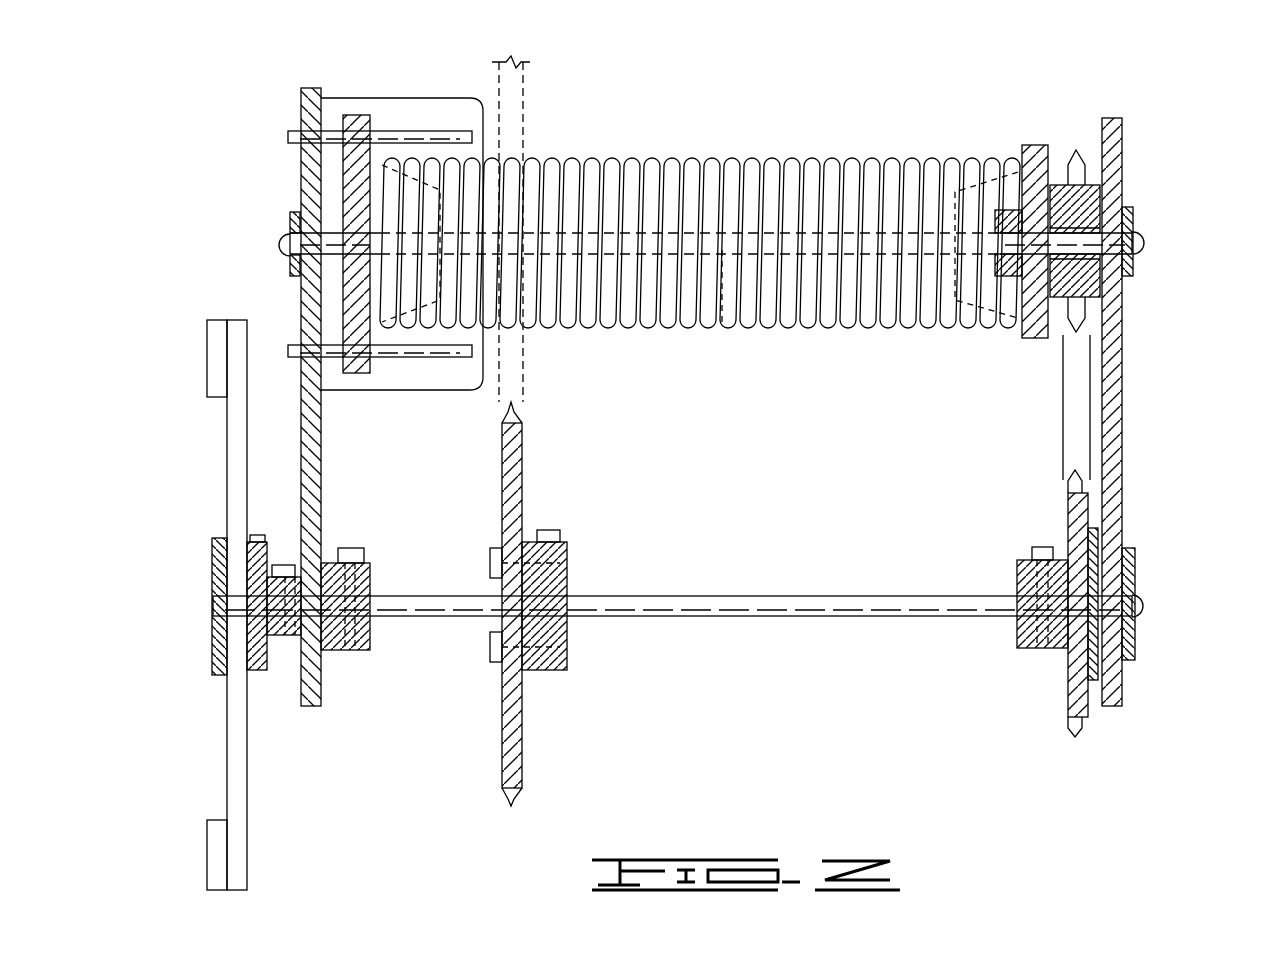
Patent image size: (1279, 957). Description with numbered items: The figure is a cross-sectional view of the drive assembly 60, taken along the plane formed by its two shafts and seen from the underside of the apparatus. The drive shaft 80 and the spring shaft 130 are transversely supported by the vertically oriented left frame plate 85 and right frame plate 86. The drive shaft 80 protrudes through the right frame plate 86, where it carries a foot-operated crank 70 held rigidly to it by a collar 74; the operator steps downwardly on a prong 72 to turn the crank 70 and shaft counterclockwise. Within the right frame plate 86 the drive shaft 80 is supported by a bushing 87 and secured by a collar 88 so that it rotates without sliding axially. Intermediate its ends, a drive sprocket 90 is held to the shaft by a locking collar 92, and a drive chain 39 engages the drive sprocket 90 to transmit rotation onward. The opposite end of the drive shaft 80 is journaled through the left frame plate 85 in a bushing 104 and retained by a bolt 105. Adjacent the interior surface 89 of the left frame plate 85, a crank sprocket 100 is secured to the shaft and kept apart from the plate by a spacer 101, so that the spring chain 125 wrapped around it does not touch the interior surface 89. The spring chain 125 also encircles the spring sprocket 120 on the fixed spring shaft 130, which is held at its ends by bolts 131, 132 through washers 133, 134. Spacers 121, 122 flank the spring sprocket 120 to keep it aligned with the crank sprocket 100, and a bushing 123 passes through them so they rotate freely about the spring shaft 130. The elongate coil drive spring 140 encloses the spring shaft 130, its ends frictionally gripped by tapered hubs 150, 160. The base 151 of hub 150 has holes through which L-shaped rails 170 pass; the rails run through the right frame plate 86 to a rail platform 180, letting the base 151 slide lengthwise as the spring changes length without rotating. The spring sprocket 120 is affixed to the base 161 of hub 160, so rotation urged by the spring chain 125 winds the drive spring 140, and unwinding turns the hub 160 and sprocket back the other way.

The drive assembly 60 is at (845, 98).
The crank 70 is at (175, 535).
The prong 72 is at (210, 835).
The collar 74 is at (212, 640).
The drive shaft 80 is at (785, 595).
The left frame plate 85 is at (1124, 458).
The right frame plate 86 is at (300, 448).
The bushing 87 is at (330, 562).
The collar 88 is at (366, 655).
The interior surface 89 is at (1098, 364).
The drive sprocket 90 is at (522, 490).
The locking collar 92 is at (570, 560).
The crank sprocket 100 is at (1068, 700).
The spacer 101 is at (1100, 545).
The bushing 104 is at (1137, 580).
The bolt 105 is at (1150, 606).
The spring sprocket 120 is at (1093, 160).
The spacer 121 is at (1062, 320).
The spacer 122 is at (1095, 272).
The bushing 123 is at (1120, 192).
The spring chain 125 is at (1065, 452).
The spring shaft 130 is at (724, 330).
The bolt 131 is at (280, 238).
The bolt 132 is at (1148, 246).
The washer 133 is at (290, 263).
The washer 134 is at (1135, 218).
The drive spring 140 is at (708, 158).
The tapered hub 150 is at (400, 130).
The base 151 is at (345, 188).
The tapered hub 160 is at (983, 150).
The base 161 is at (1040, 145).
The L-shaped rail 170 is at (420, 130).
The rail platform 180 is at (345, 100).
The drive chain 39 is at (525, 85).